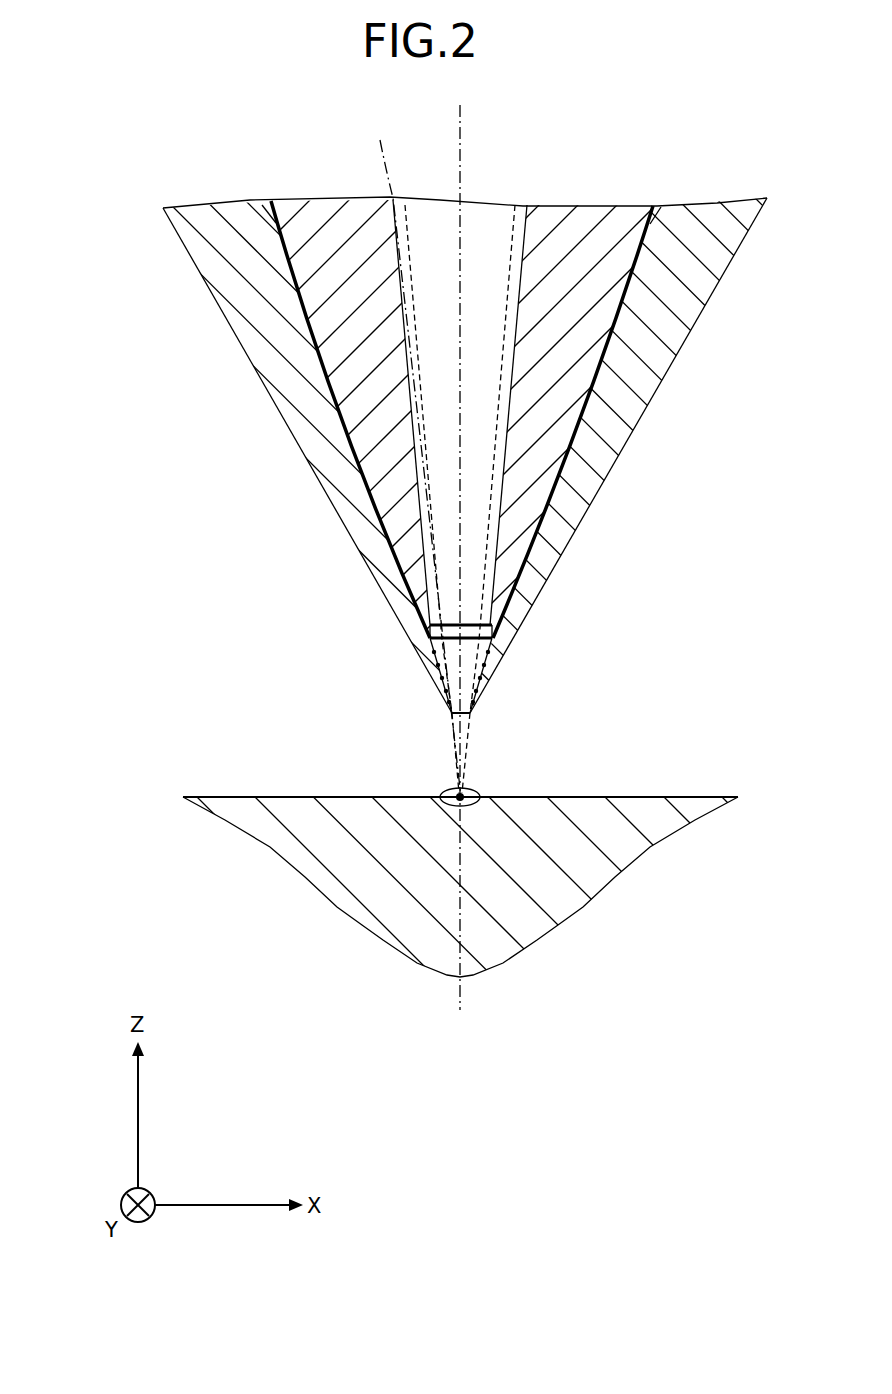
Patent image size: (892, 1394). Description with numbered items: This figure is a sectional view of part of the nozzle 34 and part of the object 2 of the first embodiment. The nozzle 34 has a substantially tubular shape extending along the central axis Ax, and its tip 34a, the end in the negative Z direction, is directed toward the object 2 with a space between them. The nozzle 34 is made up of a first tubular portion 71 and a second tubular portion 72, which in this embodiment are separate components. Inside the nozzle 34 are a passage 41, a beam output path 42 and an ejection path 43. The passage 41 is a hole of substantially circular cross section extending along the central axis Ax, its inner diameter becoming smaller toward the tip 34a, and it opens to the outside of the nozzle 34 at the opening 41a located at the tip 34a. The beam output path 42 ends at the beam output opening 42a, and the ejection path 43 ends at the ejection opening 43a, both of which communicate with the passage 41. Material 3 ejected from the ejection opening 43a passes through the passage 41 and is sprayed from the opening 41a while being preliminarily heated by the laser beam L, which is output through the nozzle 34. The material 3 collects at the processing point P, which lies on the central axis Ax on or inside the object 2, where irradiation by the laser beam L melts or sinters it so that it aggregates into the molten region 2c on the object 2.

The object 2 is at (222, 797).
The molten region 2c is at (480, 795).
The material 3 is at (466, 762).
The nozzle 34 is at (148, 140).
The tip 34a is at (450, 715).
The passage 41 is at (486, 668).
The opening 41a is at (470, 715).
The beam output path 42 is at (430, 206).
The beam output opening 42a is at (433, 663).
The ejection path 43 is at (565, 472).
The ejection opening 43a is at (500, 650).
The first tubular portion 71 is at (593, 222).
The second tubular portion 72 is at (712, 222).
The laser beam L is at (415, 456).
The central axis Ax is at (456, 545).
The processing point P is at (440, 790).